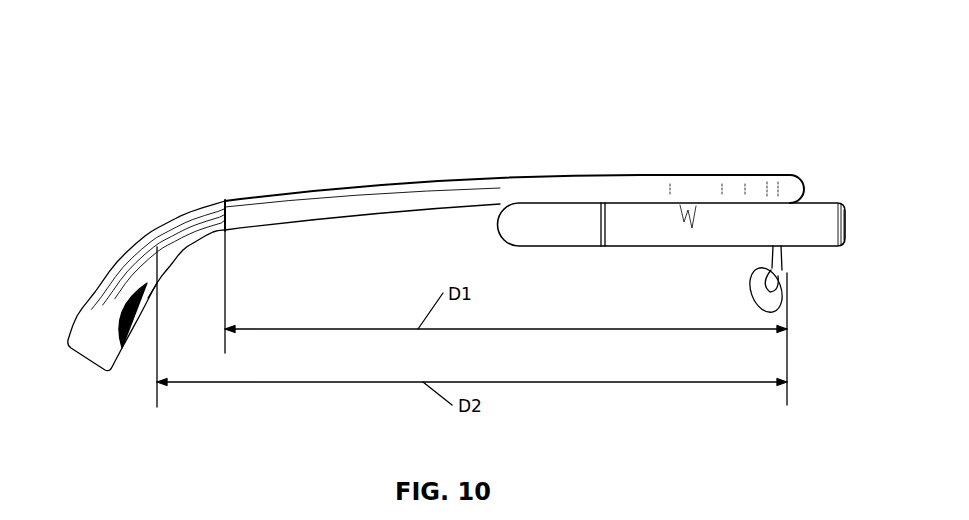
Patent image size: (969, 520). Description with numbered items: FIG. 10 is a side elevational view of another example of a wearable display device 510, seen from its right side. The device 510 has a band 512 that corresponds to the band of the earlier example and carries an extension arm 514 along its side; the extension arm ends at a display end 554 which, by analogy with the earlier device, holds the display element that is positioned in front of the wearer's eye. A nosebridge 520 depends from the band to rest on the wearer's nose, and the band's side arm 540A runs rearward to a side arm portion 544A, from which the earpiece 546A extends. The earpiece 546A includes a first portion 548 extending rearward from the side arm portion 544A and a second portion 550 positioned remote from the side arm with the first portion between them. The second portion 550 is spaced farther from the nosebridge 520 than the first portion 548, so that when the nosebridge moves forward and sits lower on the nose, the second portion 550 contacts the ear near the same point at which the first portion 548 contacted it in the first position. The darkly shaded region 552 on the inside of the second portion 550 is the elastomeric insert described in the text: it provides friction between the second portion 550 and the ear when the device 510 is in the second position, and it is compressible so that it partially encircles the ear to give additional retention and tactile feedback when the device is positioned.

The device 510 is at (595, 66).
The temple 512 is at (378, 153).
The electronics housing 514 is at (645, 223).
The nose pad 520 is at (757, 253).
The upper temple surface 540A is at (442, 192).
The hinge joint 544A is at (225, 202).
The earpiece 546A is at (128, 212).
The layered temple structure 548 is at (213, 232).
The second portion 550 is at (148, 280).
The shaded contact region 552 is at (130, 312).
The housing end cap 554 is at (837, 202).